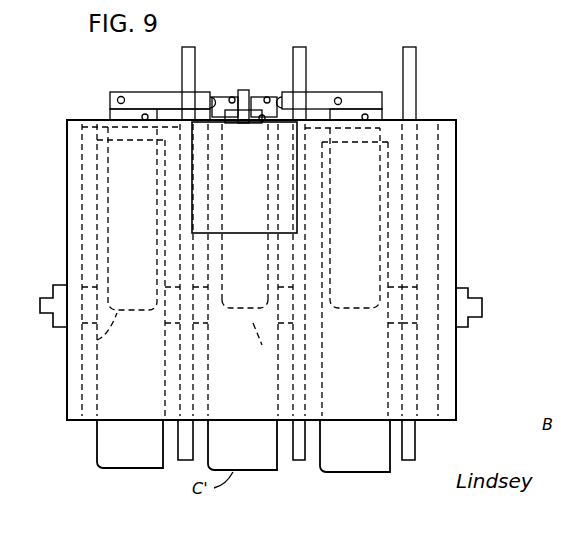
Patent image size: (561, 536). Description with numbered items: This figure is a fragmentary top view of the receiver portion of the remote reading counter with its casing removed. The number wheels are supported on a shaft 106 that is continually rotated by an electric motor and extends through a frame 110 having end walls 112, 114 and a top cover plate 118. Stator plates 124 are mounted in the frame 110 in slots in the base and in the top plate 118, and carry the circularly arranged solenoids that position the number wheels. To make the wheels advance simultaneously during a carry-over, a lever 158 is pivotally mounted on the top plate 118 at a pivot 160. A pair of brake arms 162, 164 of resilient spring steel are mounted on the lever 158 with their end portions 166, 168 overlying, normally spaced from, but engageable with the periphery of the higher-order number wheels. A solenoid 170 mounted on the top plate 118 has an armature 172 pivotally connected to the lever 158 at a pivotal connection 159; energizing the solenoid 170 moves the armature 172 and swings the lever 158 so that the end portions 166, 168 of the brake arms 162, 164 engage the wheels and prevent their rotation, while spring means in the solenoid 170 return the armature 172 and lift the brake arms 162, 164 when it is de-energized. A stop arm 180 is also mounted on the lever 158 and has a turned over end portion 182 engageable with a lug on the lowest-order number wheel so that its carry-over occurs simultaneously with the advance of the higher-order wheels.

The shaft 106 is at (483, 303).
The frame 110 is at (67, 118).
The end wall 112 is at (67, 143).
The end wall 114 is at (456, 138).
The top cover plate 118 is at (427, 128).
The stator plate 124 is at (407, 458).
The lever 158 is at (232, 97).
The pivotal connection 159 is at (266, 97).
The pivot 160 is at (206, 101).
The brake arm 162 is at (110, 197).
The brake arm 164 is at (231, 298).
The end portion 166 is at (97, 340).
The end portion 168 is at (262, 345).
The solenoid 170 is at (290, 135).
The armature 172 is at (244, 124).
The stop arm 180 is at (373, 248).
The turned over end portion 182 is at (372, 307).